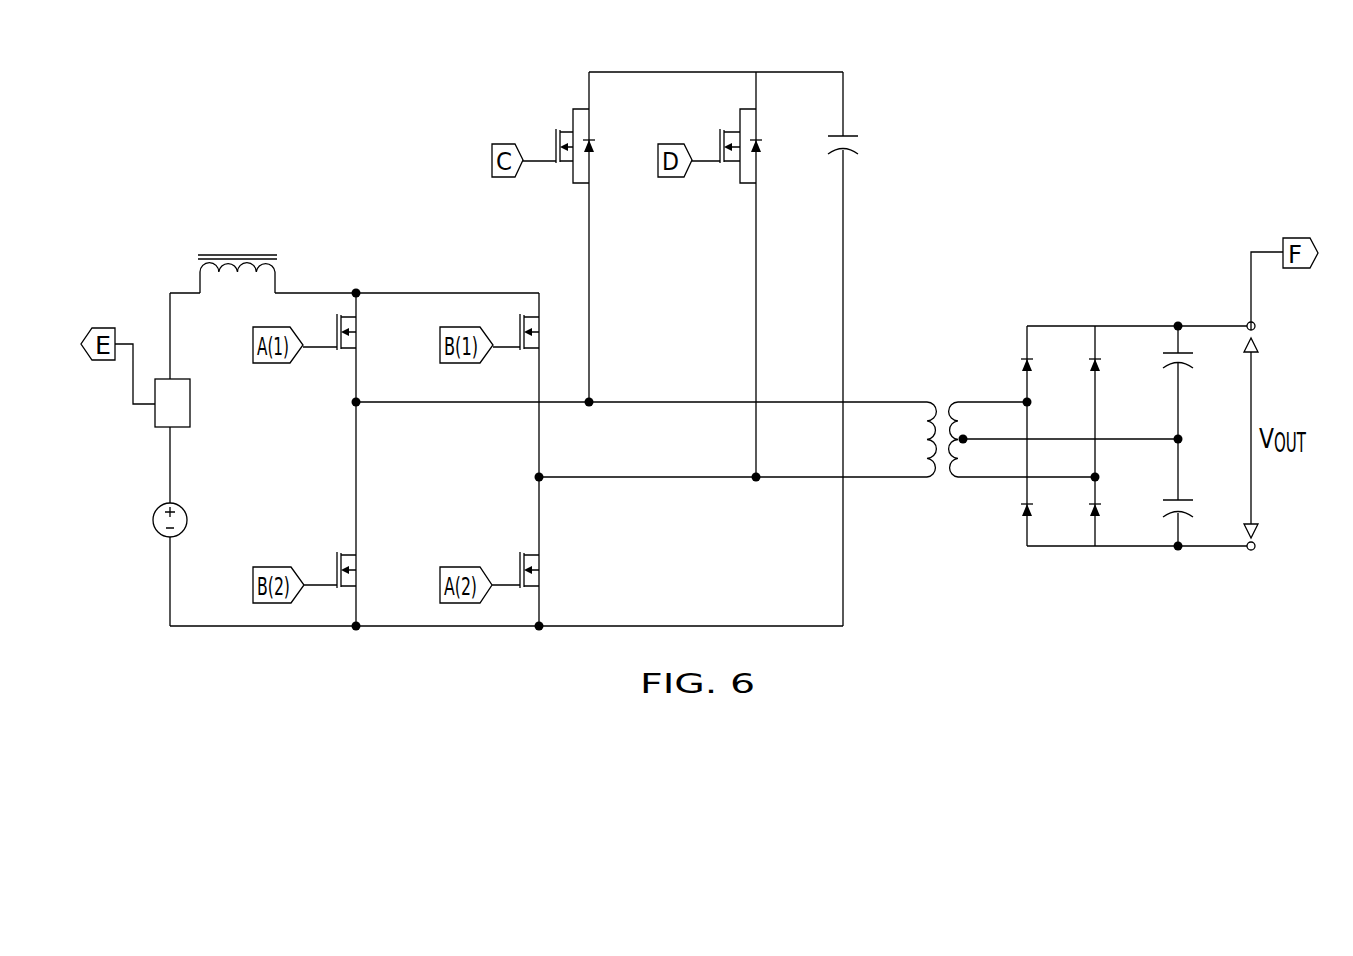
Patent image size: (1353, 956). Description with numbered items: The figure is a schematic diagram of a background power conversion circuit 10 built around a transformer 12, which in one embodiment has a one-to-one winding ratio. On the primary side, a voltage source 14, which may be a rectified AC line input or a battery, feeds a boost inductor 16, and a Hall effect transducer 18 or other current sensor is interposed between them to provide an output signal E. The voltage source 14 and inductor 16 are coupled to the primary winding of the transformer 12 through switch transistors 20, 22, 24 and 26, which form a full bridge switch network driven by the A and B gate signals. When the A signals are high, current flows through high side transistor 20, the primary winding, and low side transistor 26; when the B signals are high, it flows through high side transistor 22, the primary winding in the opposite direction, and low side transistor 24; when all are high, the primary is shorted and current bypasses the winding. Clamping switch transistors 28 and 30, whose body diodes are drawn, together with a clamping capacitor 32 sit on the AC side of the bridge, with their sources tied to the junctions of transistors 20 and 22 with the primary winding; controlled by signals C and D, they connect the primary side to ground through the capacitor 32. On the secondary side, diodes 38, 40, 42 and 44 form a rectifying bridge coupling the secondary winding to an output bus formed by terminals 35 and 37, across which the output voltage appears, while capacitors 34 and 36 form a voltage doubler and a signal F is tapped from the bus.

The power conversion circuit 10 is at (305, 148).
The transformer 12 is at (943, 430).
The voltage source 14 is at (157, 520).
The boost inductor 16 is at (237, 258).
The Hall effect transducer 18 is at (172, 404).
The switch transistor 20 is at (363, 332).
The switch transistor 22 is at (546, 332).
The switch transistor 24 is at (363, 570).
The switch transistor 26 is at (545, 570).
The clamping switch transistor 28 is at (590, 146).
The clamping switch transistor 30 is at (756, 146).
The clamping capacitor 32 is at (861, 148).
The capacitor 34 is at (1192, 366).
The terminal 35 is at (1265, 326).
The capacitor 36 is at (1192, 512).
The terminal 37 is at (1265, 547).
The diode 38 is at (1039, 366).
The diode 40 is at (1107, 366).
The diode 42 is at (1039, 512).
The diode 44 is at (1107, 512).